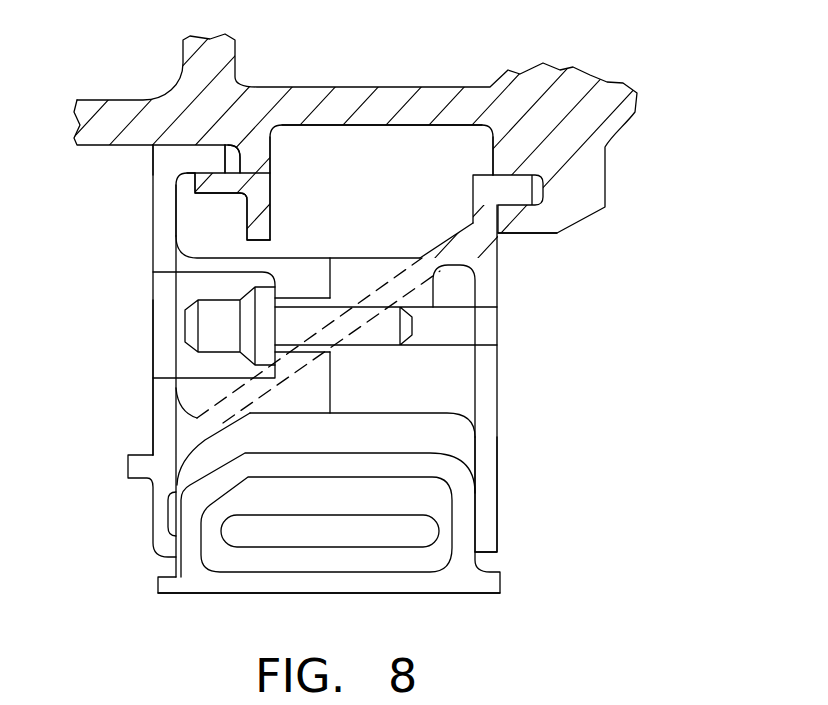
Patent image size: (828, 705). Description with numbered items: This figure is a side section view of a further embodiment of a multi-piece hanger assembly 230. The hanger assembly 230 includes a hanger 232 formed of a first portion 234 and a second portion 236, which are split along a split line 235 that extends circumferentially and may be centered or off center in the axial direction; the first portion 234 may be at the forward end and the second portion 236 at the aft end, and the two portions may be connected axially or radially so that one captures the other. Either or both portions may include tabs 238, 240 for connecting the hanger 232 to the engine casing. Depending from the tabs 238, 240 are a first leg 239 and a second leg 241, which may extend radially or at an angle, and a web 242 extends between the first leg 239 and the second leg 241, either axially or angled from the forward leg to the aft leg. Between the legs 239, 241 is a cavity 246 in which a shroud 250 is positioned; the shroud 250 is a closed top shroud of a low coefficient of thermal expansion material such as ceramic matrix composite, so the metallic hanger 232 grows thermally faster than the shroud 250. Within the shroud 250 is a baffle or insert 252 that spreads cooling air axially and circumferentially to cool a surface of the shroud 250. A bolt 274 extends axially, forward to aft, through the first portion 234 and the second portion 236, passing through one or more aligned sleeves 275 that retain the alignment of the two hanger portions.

The hanger assembly 230 is at (627, 150).
The hanger 232 is at (357, 185).
The first portion 234 is at (130, 241).
The split line 235 is at (330, 389).
The second portion 236 is at (537, 353).
The tab 238 is at (197, 158).
The first leg 239 is at (160, 392).
The tab 240 is at (507, 188).
The second leg 241 is at (487, 440).
The web 242 is at (263, 237).
The cavity 246 is at (437, 380).
The shroud 250 is at (425, 597).
The baffle or insert 252 is at (258, 537).
The bolt 274 is at (218, 328).
The sleeve 275 is at (350, 298).